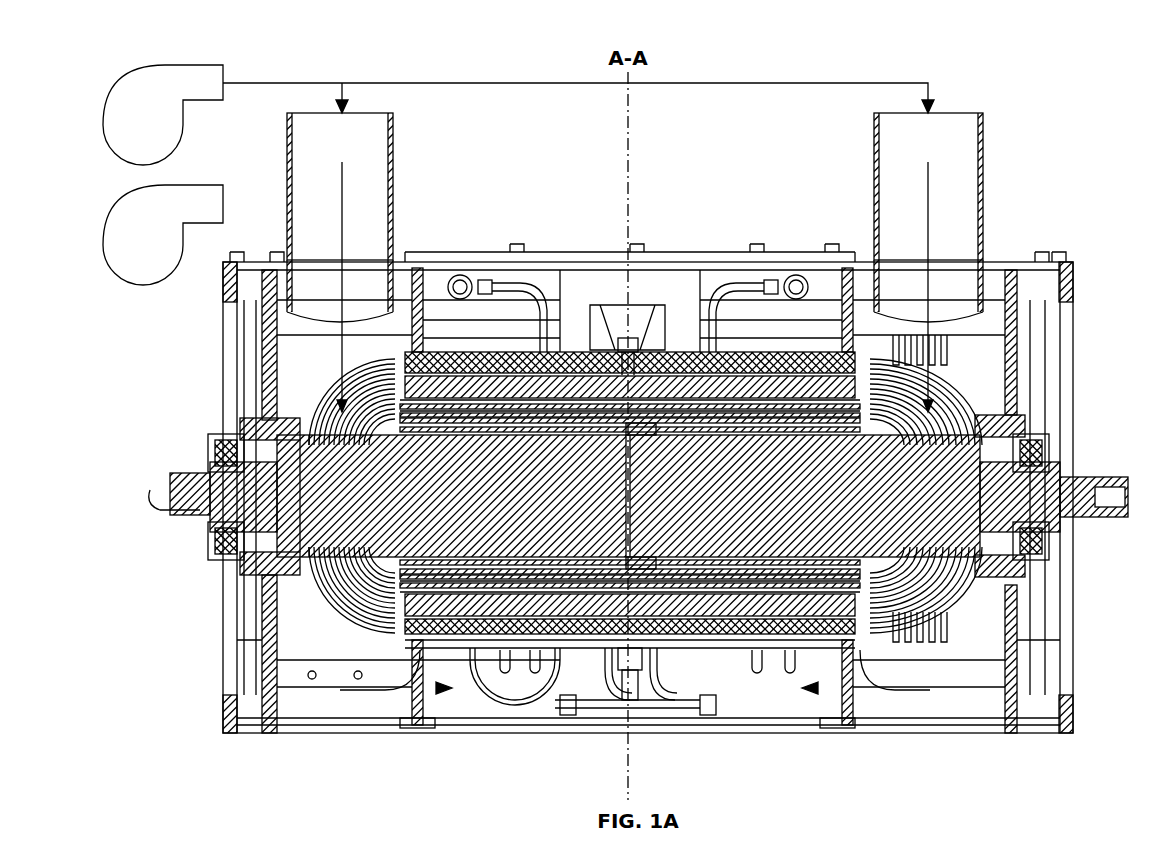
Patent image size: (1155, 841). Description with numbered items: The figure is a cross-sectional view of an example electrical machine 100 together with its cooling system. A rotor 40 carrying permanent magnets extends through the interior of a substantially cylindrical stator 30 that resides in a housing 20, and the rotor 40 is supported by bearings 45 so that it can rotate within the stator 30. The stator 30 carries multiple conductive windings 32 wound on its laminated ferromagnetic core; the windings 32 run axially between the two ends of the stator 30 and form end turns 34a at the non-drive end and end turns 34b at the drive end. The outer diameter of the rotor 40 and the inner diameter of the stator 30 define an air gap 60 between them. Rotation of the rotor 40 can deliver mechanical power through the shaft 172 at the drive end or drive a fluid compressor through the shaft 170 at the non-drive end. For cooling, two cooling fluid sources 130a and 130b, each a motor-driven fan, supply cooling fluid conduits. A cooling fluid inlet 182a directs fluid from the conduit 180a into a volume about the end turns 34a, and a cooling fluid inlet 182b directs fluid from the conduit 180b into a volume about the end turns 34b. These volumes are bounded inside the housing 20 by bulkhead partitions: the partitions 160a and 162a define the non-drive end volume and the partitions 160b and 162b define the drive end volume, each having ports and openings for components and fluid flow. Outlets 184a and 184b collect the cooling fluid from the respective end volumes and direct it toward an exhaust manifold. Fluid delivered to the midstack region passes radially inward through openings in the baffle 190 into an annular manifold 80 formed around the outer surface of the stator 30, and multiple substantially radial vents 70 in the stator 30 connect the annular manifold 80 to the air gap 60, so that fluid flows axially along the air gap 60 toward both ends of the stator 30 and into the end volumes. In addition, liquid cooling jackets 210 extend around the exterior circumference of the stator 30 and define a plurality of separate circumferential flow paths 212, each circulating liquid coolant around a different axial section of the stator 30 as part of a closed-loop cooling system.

The electrical machine 100 is at (1043, 97).
The cooling fluid source 130a is at (155, 188).
The cooling fluid source 130b is at (155, 68).
The cooling fluid conduit 180a is at (396, 150).
The cooling fluid conduit 180b is at (873, 150).
The cooling fluid inlet 182a is at (385, 275).
The cooling fluid inlet 182b is at (975, 275).
The housing 20 is at (470, 262).
The baffle 190 is at (620, 345).
The annular manifold 80 is at (640, 345).
The vents 70 is at (660, 345).
The end turns 34a is at (320, 375).
The end turns 34b is at (990, 392).
The bearings 45 is at (228, 420).
The shaft 172 is at (1095, 480).
The shaft 170 is at (205, 516).
The partition 160a is at (268, 660).
The partition 160b is at (1012, 660).
The outlet 184a is at (410, 692).
The outlet 184b is at (852, 692).
The partition 162a is at (422, 724).
The partition 162b is at (840, 726).
The rotor 40 is at (452, 692).
The circumferential flow paths 212 is at (520, 652).
The stator 30 is at (555, 642).
The air gap 60 is at (590, 602).
The liquid cooling jackets 210 is at (645, 702).
The windings 32 is at (720, 642).